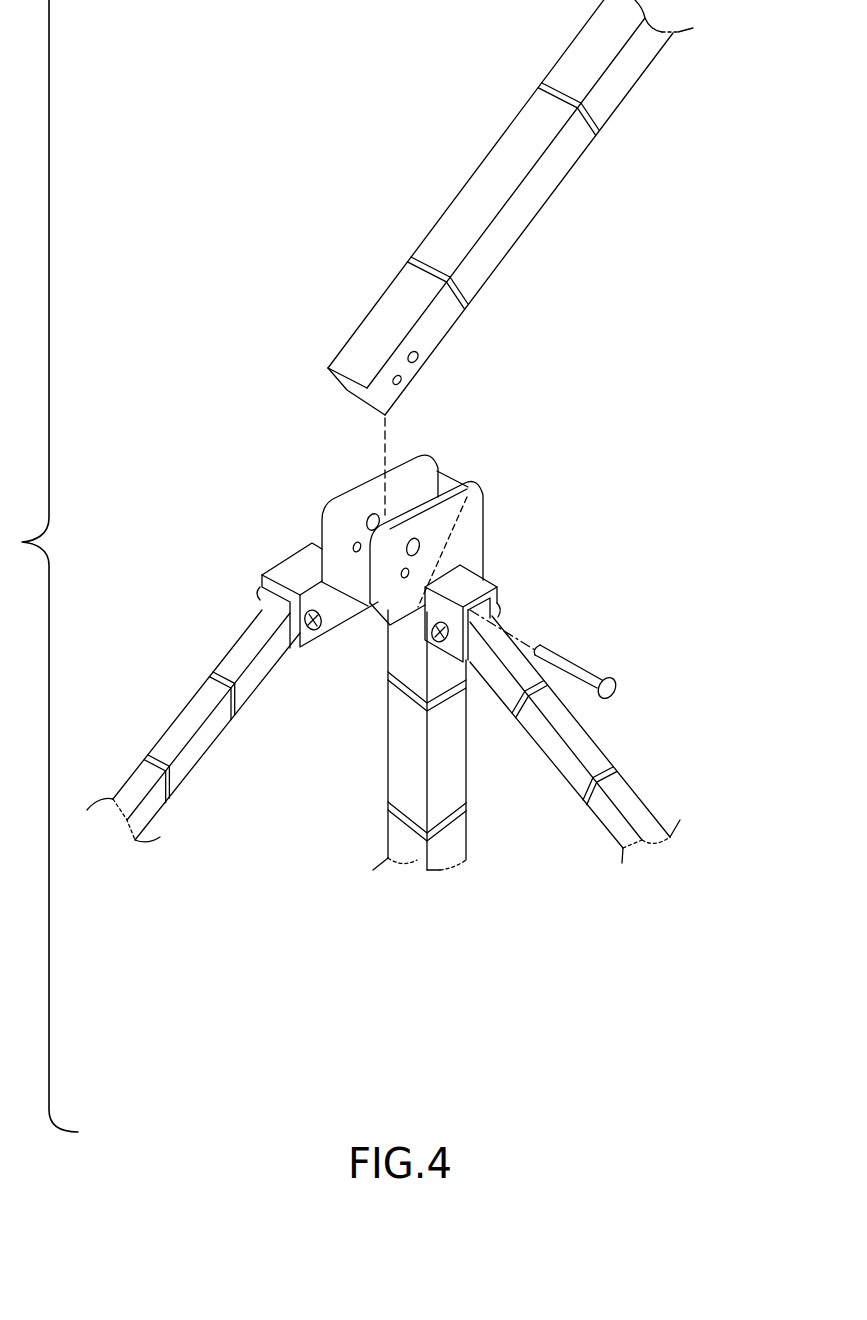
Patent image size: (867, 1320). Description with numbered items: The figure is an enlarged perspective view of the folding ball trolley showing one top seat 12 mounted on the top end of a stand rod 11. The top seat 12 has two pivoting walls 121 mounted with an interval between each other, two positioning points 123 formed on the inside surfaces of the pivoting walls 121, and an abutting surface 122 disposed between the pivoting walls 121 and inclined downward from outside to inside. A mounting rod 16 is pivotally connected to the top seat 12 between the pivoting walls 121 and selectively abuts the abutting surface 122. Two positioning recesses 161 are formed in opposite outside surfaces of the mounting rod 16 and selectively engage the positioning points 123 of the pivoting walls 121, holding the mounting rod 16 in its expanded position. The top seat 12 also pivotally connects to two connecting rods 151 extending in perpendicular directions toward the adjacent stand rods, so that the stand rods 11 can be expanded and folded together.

The stand rod 11 is at (400, 813).
The top seat 12 is at (448, 559).
The pivoting wall 121 is at (381, 511).
The abutting surface 122 is at (437, 492).
The positioning point 123 is at (371, 517).
The connecting rod 151 is at (181, 728).
The mounting rod 16 is at (510, 257).
The positioning recess 161 is at (418, 355).